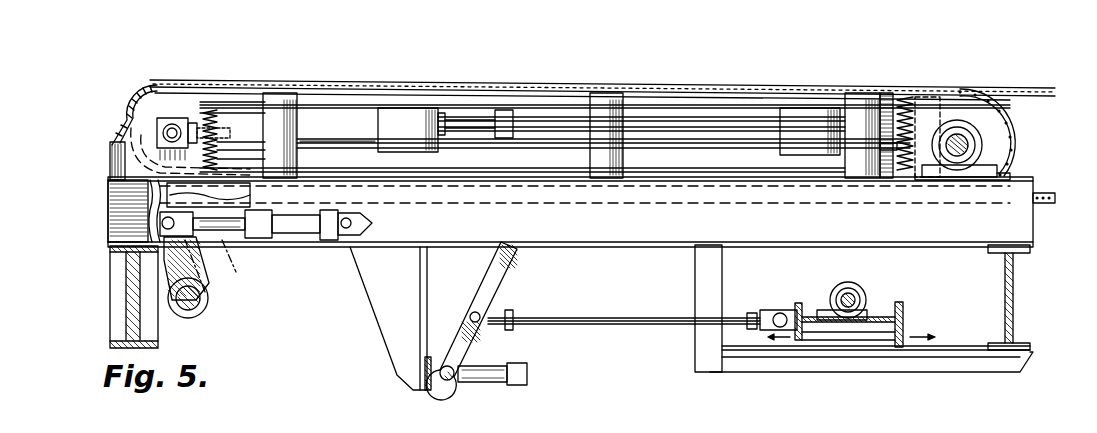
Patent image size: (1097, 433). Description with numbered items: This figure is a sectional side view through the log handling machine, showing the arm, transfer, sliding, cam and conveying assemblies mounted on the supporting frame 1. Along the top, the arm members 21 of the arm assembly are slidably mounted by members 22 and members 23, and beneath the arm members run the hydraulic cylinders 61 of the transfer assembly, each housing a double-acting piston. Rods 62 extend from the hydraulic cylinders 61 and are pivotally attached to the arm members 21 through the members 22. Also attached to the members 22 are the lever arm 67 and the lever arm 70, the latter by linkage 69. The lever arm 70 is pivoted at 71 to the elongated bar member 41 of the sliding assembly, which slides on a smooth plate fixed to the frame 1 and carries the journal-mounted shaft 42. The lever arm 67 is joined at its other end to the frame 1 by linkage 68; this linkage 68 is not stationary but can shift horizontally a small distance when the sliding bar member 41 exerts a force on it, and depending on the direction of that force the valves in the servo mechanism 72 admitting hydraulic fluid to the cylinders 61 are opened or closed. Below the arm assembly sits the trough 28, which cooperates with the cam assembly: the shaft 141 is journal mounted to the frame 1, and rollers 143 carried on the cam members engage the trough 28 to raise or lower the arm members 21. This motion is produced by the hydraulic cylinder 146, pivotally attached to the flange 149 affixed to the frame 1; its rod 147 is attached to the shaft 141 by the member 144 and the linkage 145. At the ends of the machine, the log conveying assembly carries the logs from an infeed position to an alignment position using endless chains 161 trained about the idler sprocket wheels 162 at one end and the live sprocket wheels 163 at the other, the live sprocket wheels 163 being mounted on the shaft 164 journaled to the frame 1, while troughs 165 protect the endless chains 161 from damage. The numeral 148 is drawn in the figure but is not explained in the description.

The supporting frame 1 is at (390, 322).
The arm members 21 is at (272, 86).
The members 22 is at (415, 146).
The members 23 is at (818, 147).
The trough 28 is at (158, 182).
The bar member 41 is at (905, 316).
The shaft 42 is at (858, 300).
The hydraulic cylinders 61 is at (694, 115).
The rods 62 is at (482, 118).
The lever arm 67 is at (510, 282).
The linkage 68 is at (450, 380).
The linkage 69 is at (484, 315).
The lever arm 70 is at (636, 324).
The pivot 71 is at (782, 312).
The servo mechanism 72 is at (497, 384).
The shaft 141 is at (197, 310).
The rollers 143 is at (152, 200).
The member 144 is at (170, 260).
The linkage 145 is at (162, 226).
The hydraulic cylinder 146 is at (305, 243).
The rod 147 is at (235, 233).
The bracket 148 is at (345, 242).
The flange 149 is at (406, 219).
The endless chains 161 is at (845, 205).
The idler sprocket wheels 162 is at (142, 112).
The live sprocket wheels 163 is at (1000, 128).
The shaft 164 is at (968, 150).
The troughs 165 is at (905, 94).